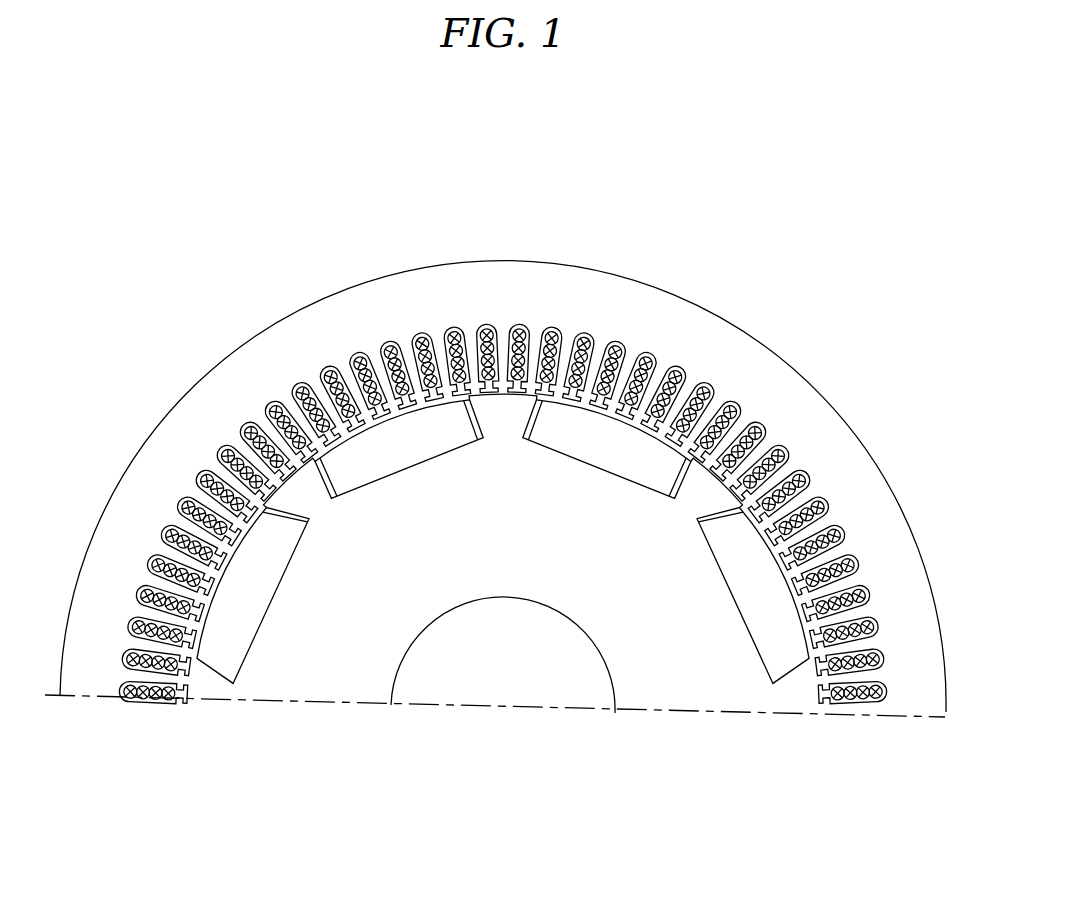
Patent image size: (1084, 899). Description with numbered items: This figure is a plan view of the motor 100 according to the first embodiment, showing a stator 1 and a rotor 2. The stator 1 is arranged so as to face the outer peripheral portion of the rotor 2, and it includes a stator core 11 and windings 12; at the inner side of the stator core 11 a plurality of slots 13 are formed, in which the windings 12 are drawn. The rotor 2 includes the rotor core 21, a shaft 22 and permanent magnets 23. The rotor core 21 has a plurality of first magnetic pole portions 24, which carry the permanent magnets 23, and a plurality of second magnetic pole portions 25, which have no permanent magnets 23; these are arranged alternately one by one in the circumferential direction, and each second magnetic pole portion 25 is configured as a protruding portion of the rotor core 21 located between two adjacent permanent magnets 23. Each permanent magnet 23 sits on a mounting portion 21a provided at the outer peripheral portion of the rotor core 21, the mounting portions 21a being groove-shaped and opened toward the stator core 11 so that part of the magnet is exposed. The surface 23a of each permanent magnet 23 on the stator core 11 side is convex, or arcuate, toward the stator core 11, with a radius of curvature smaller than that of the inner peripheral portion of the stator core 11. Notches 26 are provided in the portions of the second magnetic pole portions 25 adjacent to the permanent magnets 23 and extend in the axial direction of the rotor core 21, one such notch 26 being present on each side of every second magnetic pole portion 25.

The motor 100 is at (661, 256).
The stator 1 is at (718, 333).
The stator core 11 is at (770, 372).
The windings 12 is at (760, 430).
The slots 13 is at (805, 478).
The notches 26 is at (470, 388).
The rotor 2 is at (662, 688).
The rotor core 21 is at (361, 690).
The mounting portions 21a is at (364, 478).
The shaft 22 is at (503, 702).
The permanent magnets 23 is at (394, 470).
The surface 23a is at (348, 362).
The first magnetic pole portions 24 is at (430, 470).
The second magnetic pole portions 25 is at (497, 397).